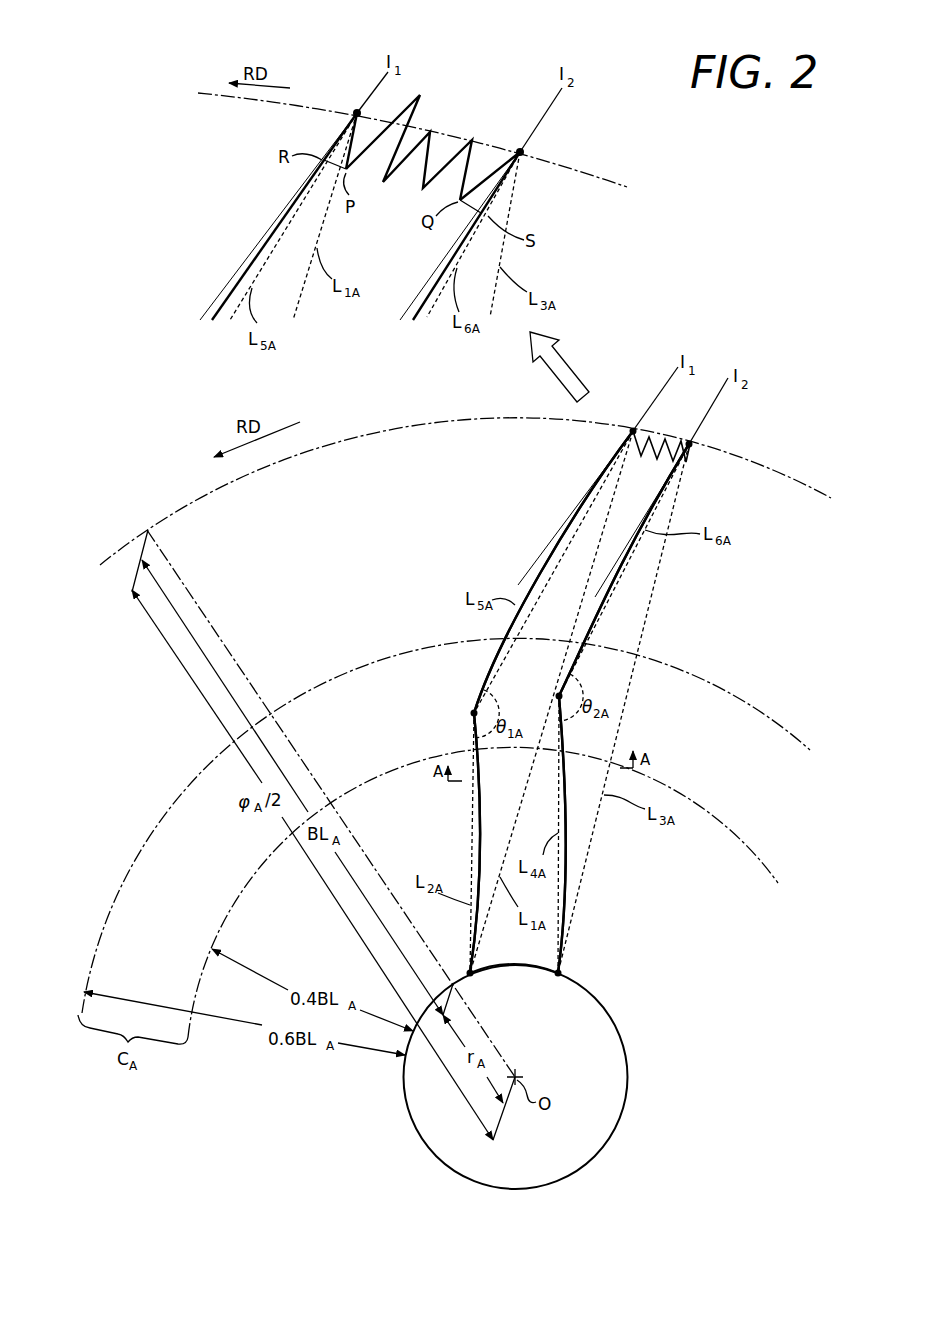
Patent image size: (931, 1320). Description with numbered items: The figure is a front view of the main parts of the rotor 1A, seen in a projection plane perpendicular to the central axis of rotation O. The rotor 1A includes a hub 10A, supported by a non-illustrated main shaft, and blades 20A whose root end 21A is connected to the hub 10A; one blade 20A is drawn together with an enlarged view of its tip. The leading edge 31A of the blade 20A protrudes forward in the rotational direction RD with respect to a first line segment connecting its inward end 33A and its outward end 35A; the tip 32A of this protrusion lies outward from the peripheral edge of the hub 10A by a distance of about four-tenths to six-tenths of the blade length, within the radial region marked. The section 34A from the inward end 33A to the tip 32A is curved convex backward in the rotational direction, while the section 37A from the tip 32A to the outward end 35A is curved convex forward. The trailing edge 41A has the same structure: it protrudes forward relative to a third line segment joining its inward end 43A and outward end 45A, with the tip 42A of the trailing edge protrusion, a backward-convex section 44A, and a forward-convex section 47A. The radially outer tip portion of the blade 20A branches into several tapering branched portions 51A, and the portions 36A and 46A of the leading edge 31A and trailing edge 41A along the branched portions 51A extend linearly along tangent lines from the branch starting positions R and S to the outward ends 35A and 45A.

The rotor 1A is at (398, 597).
The hub 10A is at (614, 1063).
The blade 20A is at (238, 213).
The root end 21A is at (508, 964).
The leading edge 31A is at (226, 294).
The tip of the leading edge protrusion 32A is at (472, 713).
The inward end of the leading edge 33A is at (470, 976).
The section of the leading edge inward in the radial direction 34A is at (477, 849).
The outward end of the leading edge 35A is at (357, 112).
The portion of the leading edge along the branched portion 36A is at (341, 136).
The section of the leading edge outward in the radial direction 37A is at (551, 540).
The trailing edge 41A is at (421, 299).
The tip of the trailing edge protrusion 42A is at (557, 696).
The inward end of the trailing edge 43A is at (558, 977).
The section of the trailing edge inward in the radial direction 44A is at (567, 868).
The outward end of the trailing edge 45A is at (522, 152).
The portion of the trailing edge along the branched portion 46A is at (500, 188).
The section of the trailing edge outward in the radial direction 47A is at (597, 612).
The branched portions 51A is at (370, 128).